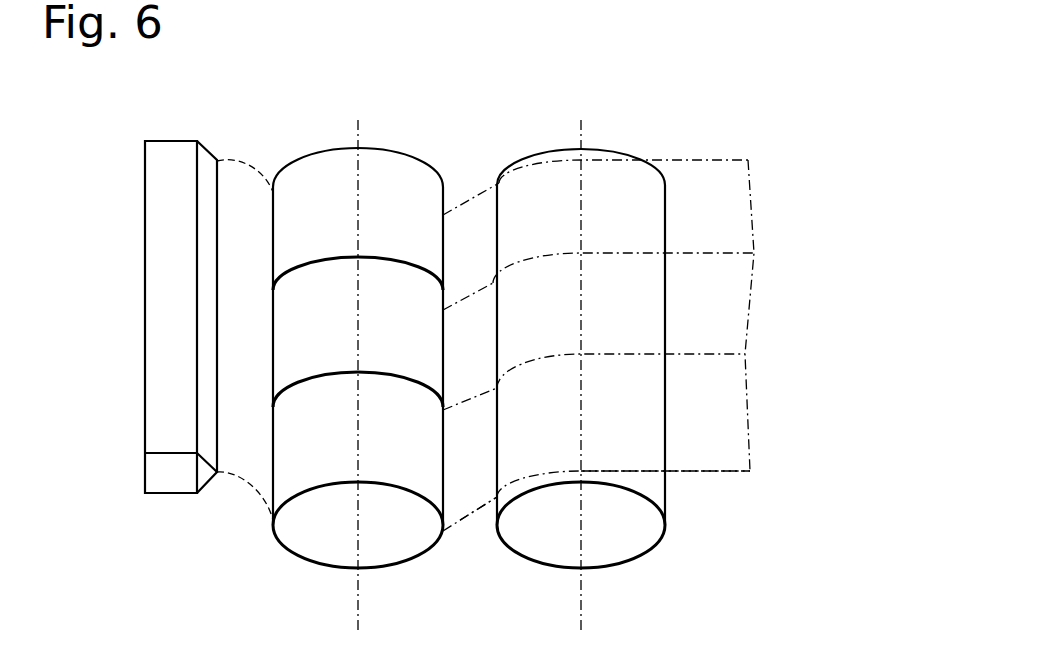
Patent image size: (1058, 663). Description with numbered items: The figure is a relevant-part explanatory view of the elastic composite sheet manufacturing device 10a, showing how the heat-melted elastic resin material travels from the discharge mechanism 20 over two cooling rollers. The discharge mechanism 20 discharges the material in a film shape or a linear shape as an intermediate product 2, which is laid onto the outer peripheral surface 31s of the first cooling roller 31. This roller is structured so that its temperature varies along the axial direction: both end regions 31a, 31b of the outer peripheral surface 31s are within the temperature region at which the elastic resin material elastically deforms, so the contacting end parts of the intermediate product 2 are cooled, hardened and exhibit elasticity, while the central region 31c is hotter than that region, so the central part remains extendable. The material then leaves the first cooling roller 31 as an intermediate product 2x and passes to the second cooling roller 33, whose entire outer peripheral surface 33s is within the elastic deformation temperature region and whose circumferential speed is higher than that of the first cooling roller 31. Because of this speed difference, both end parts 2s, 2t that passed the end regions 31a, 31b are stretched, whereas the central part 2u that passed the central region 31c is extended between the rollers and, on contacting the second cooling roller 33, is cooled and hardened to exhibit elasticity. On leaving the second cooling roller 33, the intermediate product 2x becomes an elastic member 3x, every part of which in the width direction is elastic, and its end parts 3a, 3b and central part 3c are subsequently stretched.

The elastic composite sheet manufacturing device 10a is at (808, 96).
The discharge mechanism 20 is at (175, 493).
The intermediate product 2 is at (270, 195).
The end part 2s is at (481, 273).
The central part 2u is at (482, 368).
The end part 2t is at (481, 463).
The intermediate product 2x is at (472, 512).
The first cooling roller 31 is at (400, 568).
The outer peripheral surface 31s is at (385, 187).
The end region 31a is at (335, 228).
The central region 31c is at (335, 332).
The end region 31b is at (335, 437).
The second cooling roller 33 is at (630, 560).
The outer peripheral surface 33s is at (608, 187).
The end part 3a is at (713, 233).
The central part 3c is at (713, 323).
The end part 3b is at (717, 433).
The elastic member 3x is at (712, 471).